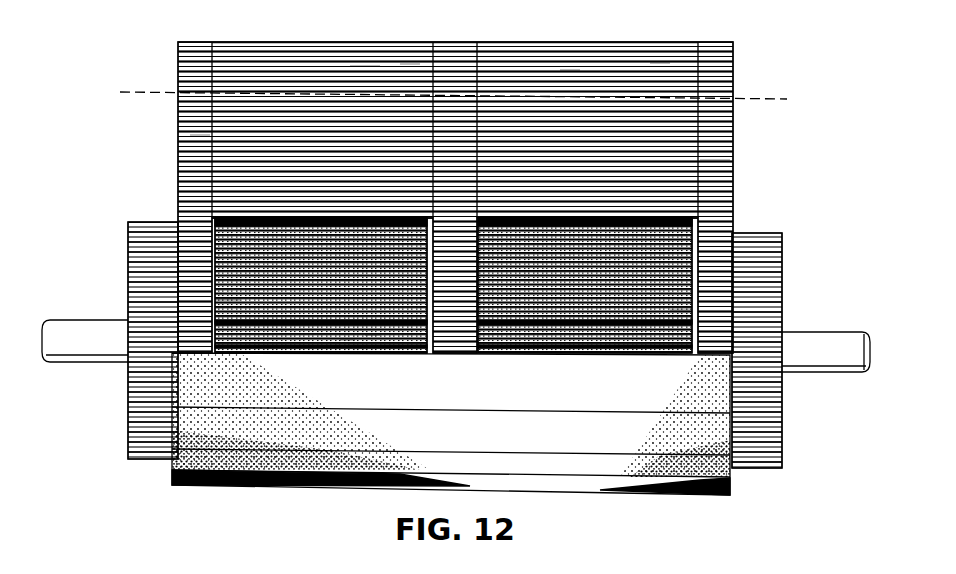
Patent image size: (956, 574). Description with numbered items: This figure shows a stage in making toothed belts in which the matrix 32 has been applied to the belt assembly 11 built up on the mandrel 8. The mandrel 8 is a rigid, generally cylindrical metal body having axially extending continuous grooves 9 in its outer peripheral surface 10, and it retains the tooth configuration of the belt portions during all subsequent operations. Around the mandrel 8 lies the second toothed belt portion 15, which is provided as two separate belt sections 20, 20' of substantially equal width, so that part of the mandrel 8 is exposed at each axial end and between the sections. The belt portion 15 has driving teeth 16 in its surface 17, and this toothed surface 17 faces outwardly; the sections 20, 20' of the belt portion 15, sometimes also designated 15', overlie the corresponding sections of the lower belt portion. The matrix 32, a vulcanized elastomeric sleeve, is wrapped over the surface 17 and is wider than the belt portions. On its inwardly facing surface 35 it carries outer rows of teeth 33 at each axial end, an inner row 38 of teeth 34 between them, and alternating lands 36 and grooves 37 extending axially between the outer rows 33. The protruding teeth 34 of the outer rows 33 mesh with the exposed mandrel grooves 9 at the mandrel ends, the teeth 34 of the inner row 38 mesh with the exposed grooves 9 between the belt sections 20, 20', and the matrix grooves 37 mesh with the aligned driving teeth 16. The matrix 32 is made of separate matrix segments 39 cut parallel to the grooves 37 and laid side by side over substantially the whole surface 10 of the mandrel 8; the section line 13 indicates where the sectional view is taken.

The mandrel 8 is at (770, 462).
The grooves 9 is at (755, 345).
The outer peripheral surface 10 is at (143, 252).
The belt assembly 11 is at (155, 466).
The section line 13- 13 is at (122, 92).
The second toothed belt portion 15 is at (164, 277).
The rotor lamination stack 15' is at (750, 272).
The driving teeth 16 is at (372, 337).
The surface 17 is at (348, 340).
The belt section 20 is at (397, 349).
The belt section 20' is at (553, 353).
The matrix 32 is at (305, 40).
The outer rows of teeth 33 is at (189, 55).
The teeth 34 is at (468, 72).
The inwardly facing surface 35 is at (262, 68).
The lands 36 is at (363, 83).
The grooves 37 is at (410, 78).
The inner row of teeth 38 is at (455, 50).
The matrix segments 39 is at (215, 385).